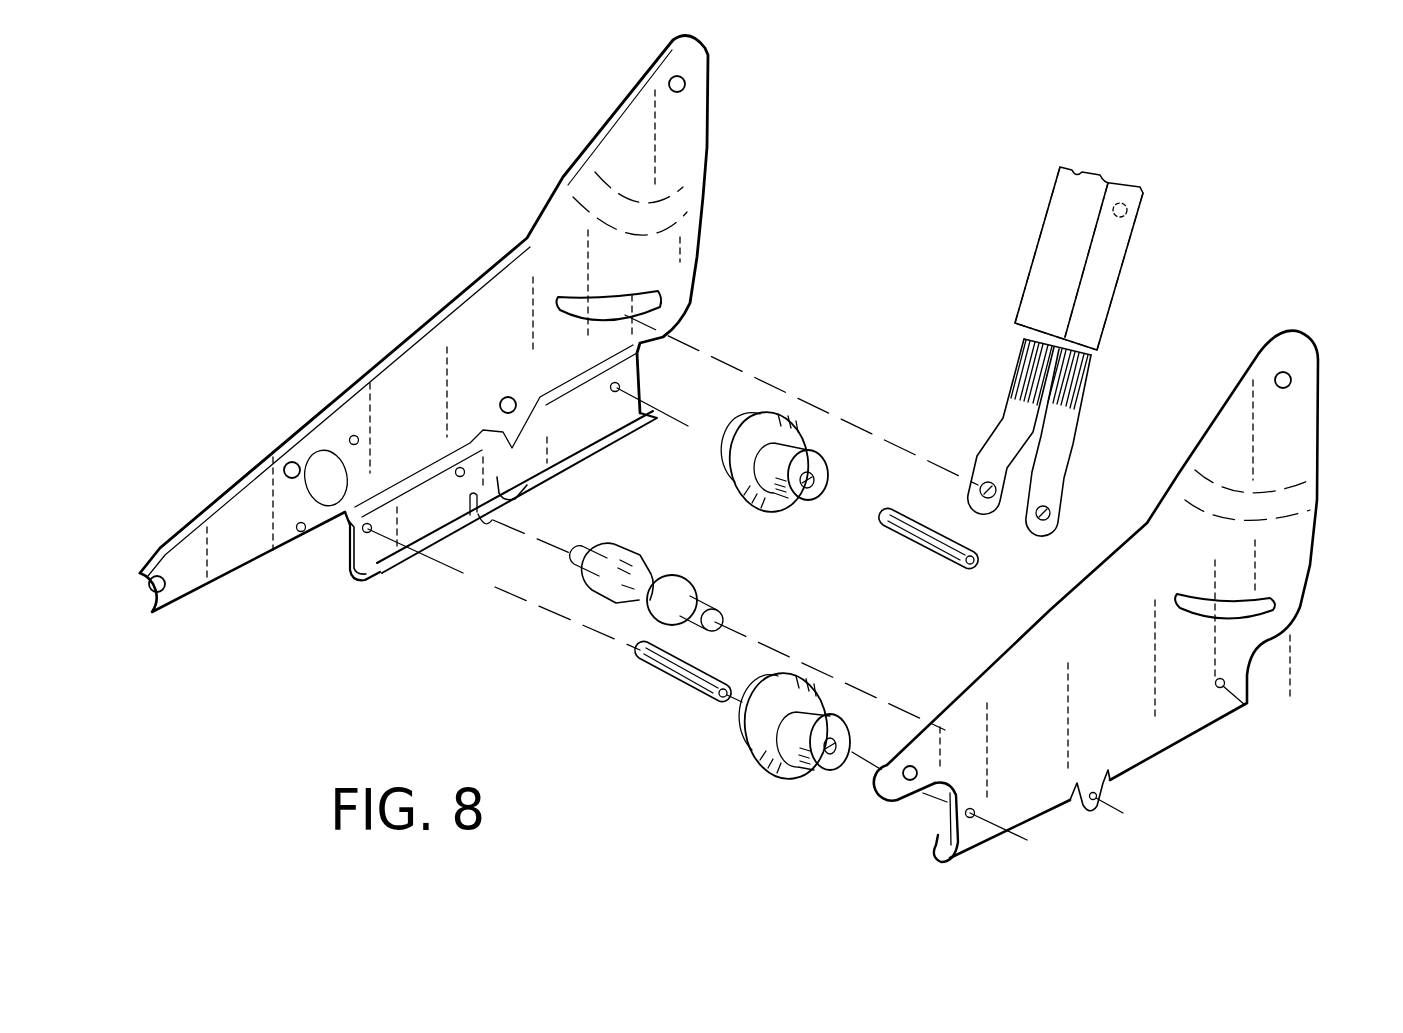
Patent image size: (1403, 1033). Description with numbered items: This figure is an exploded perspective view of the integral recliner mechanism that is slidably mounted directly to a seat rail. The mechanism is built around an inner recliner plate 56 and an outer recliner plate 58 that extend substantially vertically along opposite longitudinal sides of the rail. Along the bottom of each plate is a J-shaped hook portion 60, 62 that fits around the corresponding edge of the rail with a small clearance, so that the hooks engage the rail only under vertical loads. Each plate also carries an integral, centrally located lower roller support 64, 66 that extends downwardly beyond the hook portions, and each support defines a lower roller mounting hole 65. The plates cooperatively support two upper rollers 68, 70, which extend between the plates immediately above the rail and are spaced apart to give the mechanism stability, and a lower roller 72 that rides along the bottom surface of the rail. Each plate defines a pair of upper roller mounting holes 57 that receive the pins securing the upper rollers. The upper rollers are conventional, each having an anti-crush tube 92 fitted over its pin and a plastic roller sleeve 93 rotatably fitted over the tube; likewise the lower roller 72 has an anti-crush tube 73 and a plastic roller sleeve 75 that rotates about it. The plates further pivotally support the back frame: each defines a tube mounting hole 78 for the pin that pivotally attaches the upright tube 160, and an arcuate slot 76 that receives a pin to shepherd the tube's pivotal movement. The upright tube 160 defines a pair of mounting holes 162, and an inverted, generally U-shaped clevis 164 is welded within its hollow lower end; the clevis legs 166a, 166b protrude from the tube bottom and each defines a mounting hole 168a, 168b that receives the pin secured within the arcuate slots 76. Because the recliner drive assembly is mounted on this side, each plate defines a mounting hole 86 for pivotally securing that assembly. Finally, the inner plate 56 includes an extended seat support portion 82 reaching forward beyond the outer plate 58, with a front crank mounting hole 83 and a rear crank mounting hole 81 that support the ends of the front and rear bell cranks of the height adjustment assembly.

The inner recliner plate 56 is at (710, 132).
The outer recliner plate 58 is at (1320, 355).
The upper roller mounting holes 57 is at (618, 393).
The J-shaped hook portion 60 is at (347, 560).
The J-shaped hook portion 62 is at (947, 830).
The lower roller support 64 is at (485, 525).
The lower roller mounting hole 65 is at (497, 513).
The lower roller support 66 is at (1087, 813).
The upper roller 68 is at (757, 750).
The upper roller 70 is at (790, 415).
The lower roller 72 is at (683, 587).
The anti-crush tube 73 is at (705, 614).
The plastic roller sleeve 75 is at (638, 550).
The arcuate slot 76 is at (650, 300).
The tube mounting hole 78 is at (685, 81).
The rear crank mounting hole 81 is at (515, 398).
The extended seat support portion 82 is at (190, 520).
The front crank mounting hole 83 is at (160, 594).
The mounting hole 86 is at (293, 480).
The anti-crush tube 92 is at (903, 540).
The plastic roller sleeve 93 is at (812, 433).
The upright tube 160 is at (1143, 202).
The mounting holes 162 is at (1118, 217).
The clevis 164 is at (1024, 435).
The clevis leg 166a is at (1080, 483).
The clevis leg 166b is at (980, 443).
The mounting hole 168a is at (1048, 517).
The mounting hole 168b is at (980, 490).